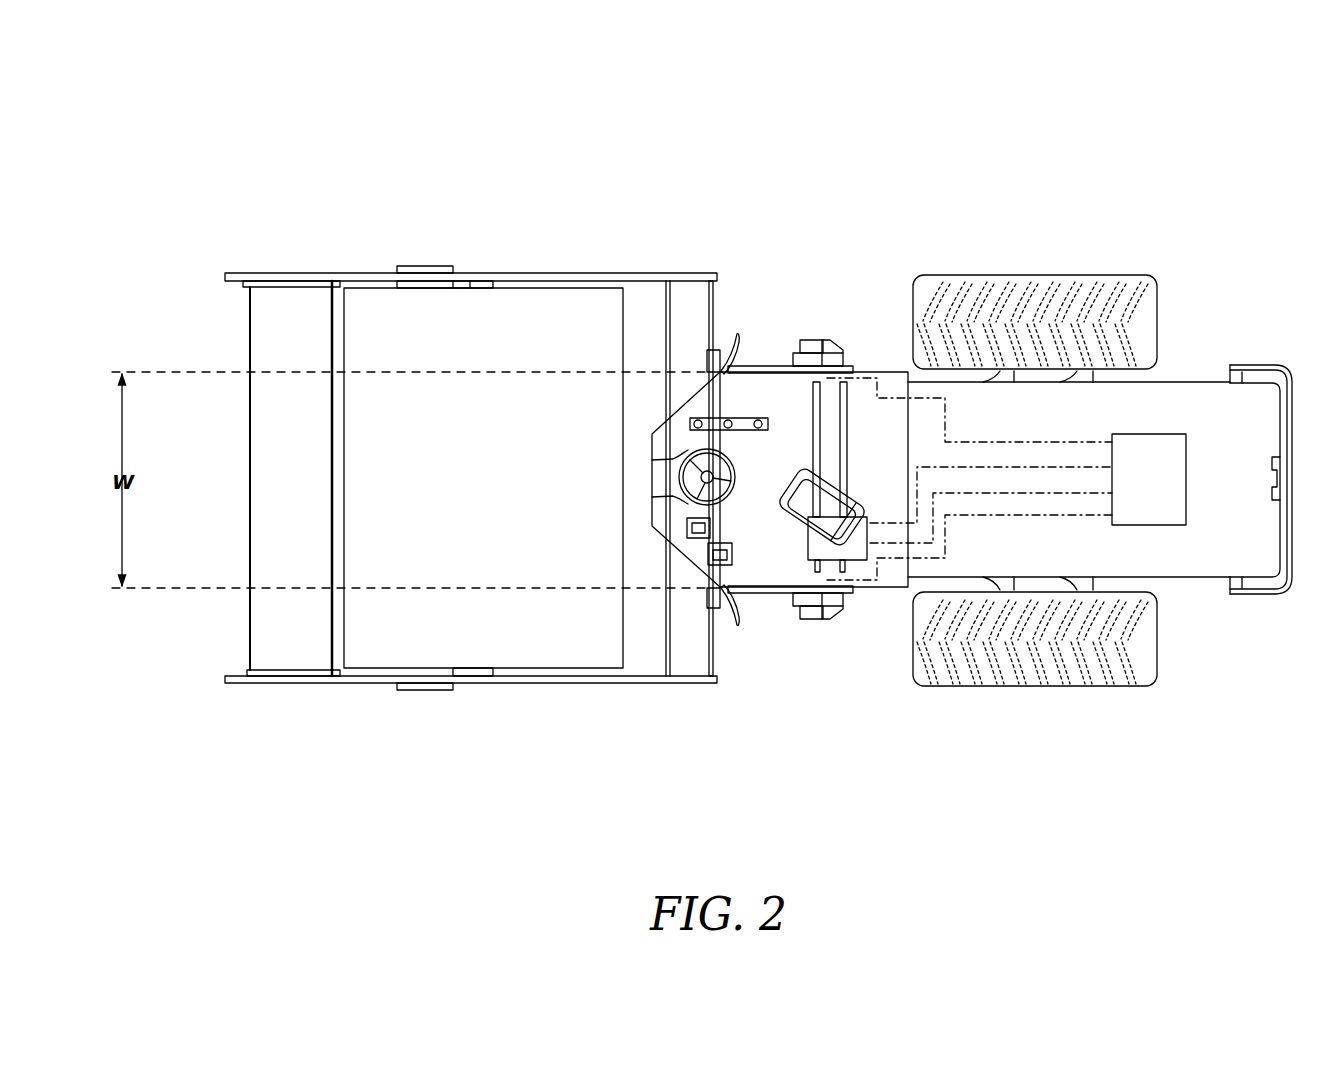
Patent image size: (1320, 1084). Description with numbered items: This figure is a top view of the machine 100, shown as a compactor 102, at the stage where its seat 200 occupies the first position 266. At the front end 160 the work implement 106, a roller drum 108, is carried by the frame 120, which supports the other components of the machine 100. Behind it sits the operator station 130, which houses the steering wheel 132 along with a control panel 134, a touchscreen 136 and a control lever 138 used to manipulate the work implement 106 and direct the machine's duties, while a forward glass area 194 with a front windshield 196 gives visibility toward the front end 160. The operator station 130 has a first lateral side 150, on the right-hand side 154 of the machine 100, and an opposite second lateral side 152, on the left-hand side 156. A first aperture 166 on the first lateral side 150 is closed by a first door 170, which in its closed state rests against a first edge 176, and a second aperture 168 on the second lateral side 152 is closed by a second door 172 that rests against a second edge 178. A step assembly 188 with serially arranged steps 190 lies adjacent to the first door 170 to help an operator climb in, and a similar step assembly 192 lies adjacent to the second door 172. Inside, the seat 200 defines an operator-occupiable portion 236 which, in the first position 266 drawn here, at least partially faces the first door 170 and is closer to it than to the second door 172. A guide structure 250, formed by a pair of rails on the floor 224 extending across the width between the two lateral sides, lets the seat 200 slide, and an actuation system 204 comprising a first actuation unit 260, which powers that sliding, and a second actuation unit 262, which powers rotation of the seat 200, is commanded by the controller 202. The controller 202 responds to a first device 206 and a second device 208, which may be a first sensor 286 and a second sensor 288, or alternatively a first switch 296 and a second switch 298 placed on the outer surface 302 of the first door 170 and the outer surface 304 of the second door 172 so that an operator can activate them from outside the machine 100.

The machine 100 is at (232, 143).
The compactor 102 is at (310, 222).
The work implement 106 is at (340, 355).
The roller drum 108 is at (342, 298).
The frame 120 is at (708, 660).
The operator station 130 is at (650, 483).
The steering wheel 132 is at (651, 437).
The control panel 134 is at (686, 526).
The touchscreen 136 is at (708, 552).
The control lever 138 is at (757, 510).
The first lateral side 150 is at (842, 825).
The second lateral side 152 is at (843, 107).
The right-hand side 154 is at (514, 803).
The left-hand side 156 is at (513, 152).
The front end 160 is at (250, 408).
The first aperture 166 is at (765, 596).
The second aperture 168 is at (762, 370).
The first door 170 is at (788, 604).
The second door 172 is at (775, 366).
The first edge 176 is at (808, 620).
The second edge 178 is at (797, 340).
The step assembly 188 is at (855, 612).
The steps 190 is at (818, 620).
The step assembly 192 is at (822, 337).
The forward glass area 194 is at (647, 462).
The front windshield 196 is at (675, 540).
The seat 200 is at (864, 491).
The controller 202 is at (1187, 457).
The actuation system 204 is at (920, 577).
The first device 206 is at (840, 613).
The second device 208 is at (846, 356).
The floor 224 is at (796, 467).
The operator-occupiable portion 236 is at (790, 522).
The guide structure 250 is at (872, 378).
The first actuation unit 260 is at (870, 532).
The second actuation unit 262 is at (878, 520).
The first position 266 is at (723, 350).
The first sensor 286 is at (828, 620).
The second sensor 288 is at (836, 340).
The first switch 296 is at (863, 567).
The second switch 298 is at (866, 372).
The outer surface 302 is at (752, 594).
The outer surface 304 is at (747, 363).